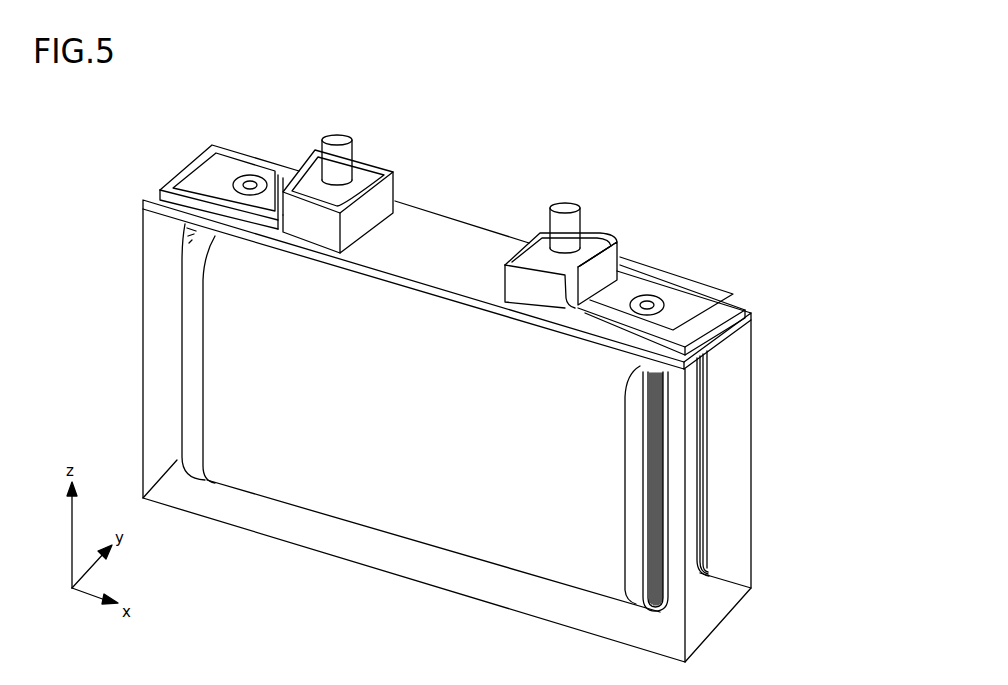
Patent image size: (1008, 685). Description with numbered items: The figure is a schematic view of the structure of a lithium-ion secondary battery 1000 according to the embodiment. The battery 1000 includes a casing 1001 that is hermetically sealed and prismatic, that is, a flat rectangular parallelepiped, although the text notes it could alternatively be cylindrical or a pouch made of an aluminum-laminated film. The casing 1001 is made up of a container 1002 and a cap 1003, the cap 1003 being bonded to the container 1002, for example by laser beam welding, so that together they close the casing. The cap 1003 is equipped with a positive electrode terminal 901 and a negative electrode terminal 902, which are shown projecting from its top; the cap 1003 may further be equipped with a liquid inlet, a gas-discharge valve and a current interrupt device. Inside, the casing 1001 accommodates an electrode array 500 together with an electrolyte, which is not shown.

The battery 1000 is at (507, 130).
The casing 1001 is at (832, 268).
The container 1002 is at (755, 358).
The cap 1003 is at (755, 310).
The positive electrode terminal 901 is at (567, 205).
The negative electrode terminal 902 is at (338, 138).
The electrode array 500 is at (397, 433).